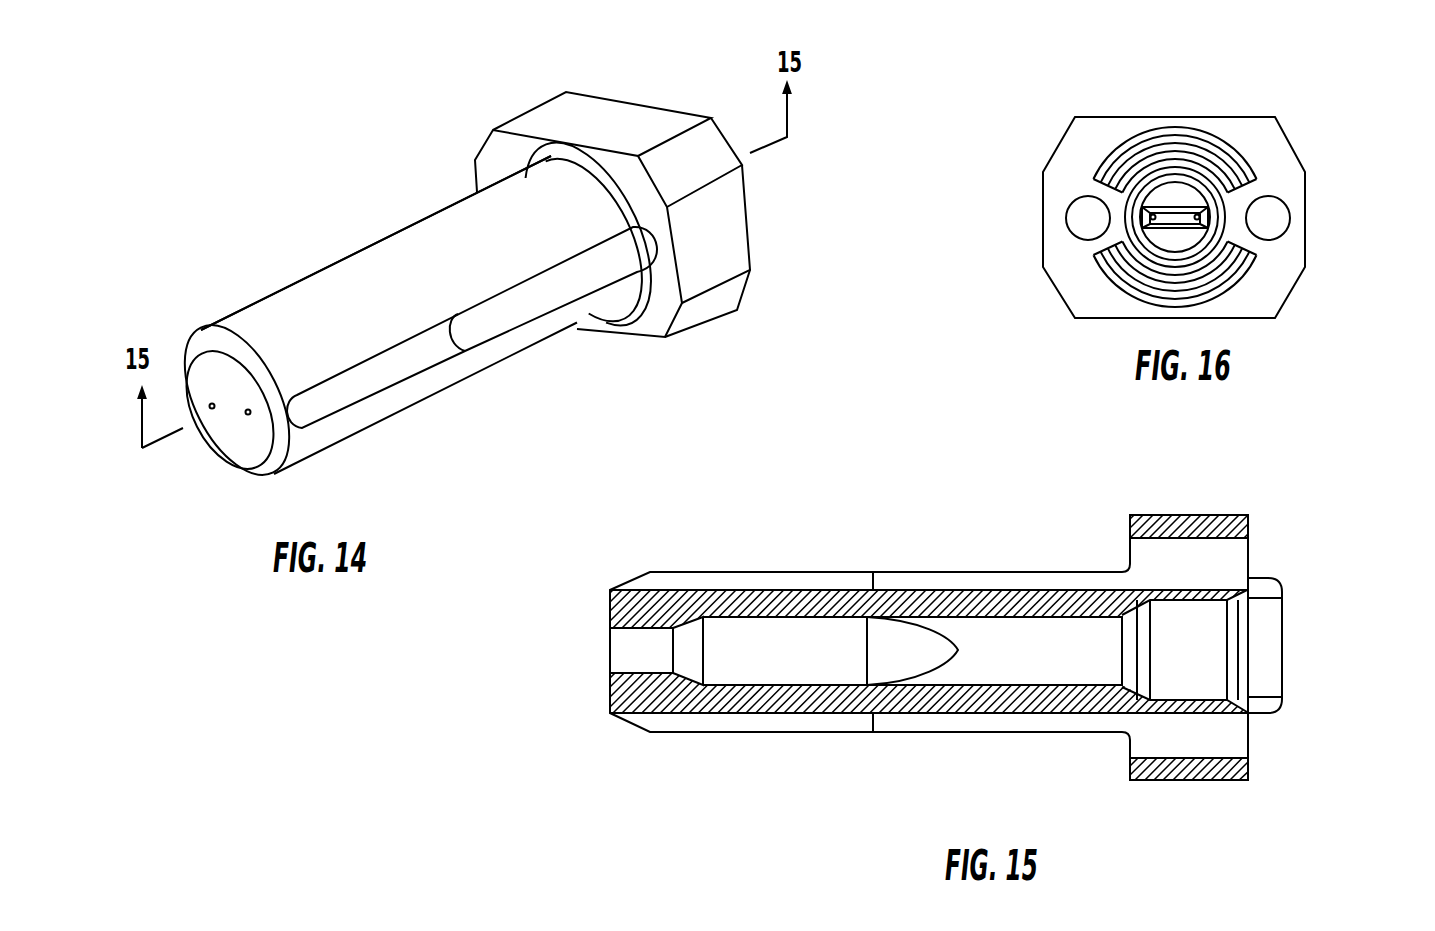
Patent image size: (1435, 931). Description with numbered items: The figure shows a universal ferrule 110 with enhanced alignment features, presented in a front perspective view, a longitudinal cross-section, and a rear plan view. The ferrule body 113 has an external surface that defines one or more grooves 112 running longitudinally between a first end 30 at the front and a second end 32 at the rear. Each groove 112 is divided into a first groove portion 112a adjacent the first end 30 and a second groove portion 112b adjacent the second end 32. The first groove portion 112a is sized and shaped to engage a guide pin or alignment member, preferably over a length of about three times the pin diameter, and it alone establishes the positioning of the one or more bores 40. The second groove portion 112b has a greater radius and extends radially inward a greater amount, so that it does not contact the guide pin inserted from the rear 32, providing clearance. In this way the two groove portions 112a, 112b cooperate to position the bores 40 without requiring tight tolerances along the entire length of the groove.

In FIG. 14, the first end 30 is at (310, 298).
In FIG. 15, the first end 30 is at (667, 753).
In FIG. 14, the second end 32 is at (699, 353).
In FIG. 15, the second end 32 is at (1266, 784).
In FIG. 16, the second end 32 is at (1290, 186).
In FIG. 14, the bores 40 is at (212, 409).
In FIG. 15, the bores 40 is at (610, 673).
In FIG. 16, the bores 40 is at (1197, 214).
In FIG. 14, the universal ferrule 110 is at (544, 376).
In FIG. 15, the universal ferrule 110 is at (836, 781).
In FIG. 16, the universal ferrule 110 is at (1021, 133).
In FIG. 14, the groove 112 is at (368, 385).
In FIG. 15, the groove 112 is at (803, 578).
In FIG. 15, the first groove portion 112a is at (738, 722).
In FIG. 16, the first groove portion 112a is at (1237, 217).
In FIG. 15, the second groove portion 112b is at (990, 725).
In FIG. 16, the second groove portion 112b is at (1227, 250).
In FIG. 14, the ferrule body 113 is at (381, 240).